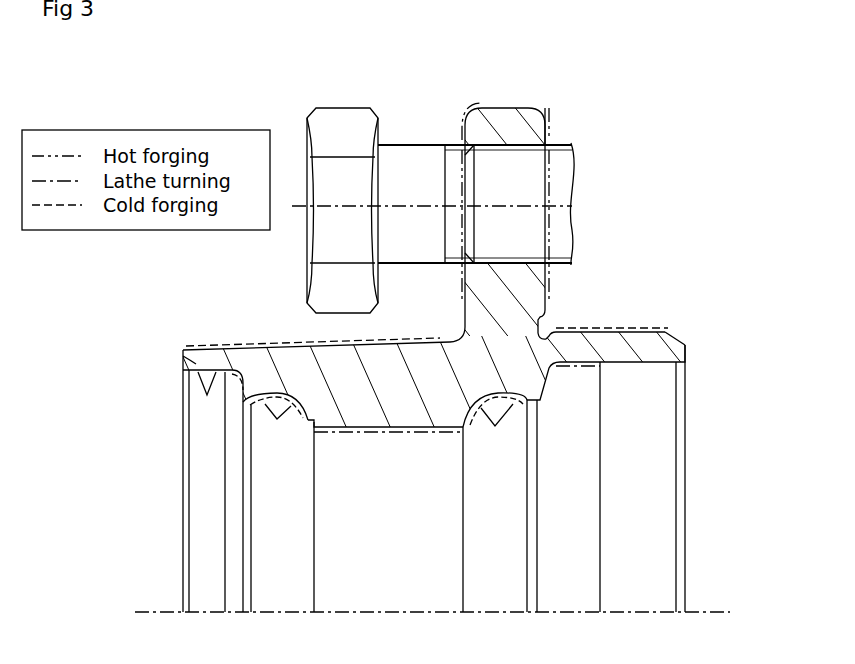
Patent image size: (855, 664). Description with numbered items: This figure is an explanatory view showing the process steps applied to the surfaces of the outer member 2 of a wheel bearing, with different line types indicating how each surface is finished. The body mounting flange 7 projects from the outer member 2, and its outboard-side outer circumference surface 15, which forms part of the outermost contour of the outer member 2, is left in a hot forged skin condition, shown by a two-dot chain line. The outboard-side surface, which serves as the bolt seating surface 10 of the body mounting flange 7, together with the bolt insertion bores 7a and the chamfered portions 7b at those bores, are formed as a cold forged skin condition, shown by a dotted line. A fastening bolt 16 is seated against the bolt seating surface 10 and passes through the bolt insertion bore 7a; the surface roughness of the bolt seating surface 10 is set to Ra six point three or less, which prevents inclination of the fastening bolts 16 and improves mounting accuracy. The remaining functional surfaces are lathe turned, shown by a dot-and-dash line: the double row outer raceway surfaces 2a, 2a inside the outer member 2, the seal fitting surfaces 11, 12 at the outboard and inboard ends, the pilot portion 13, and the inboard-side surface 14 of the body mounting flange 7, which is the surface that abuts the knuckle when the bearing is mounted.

The outer member 2 is at (706, 232).
The double row outer raceway surfaces 2a is at (270, 404).
The body mounting flange 7 is at (507, 118).
The bolt insertion bores 7a is at (530, 247).
The chamfered portions 7b is at (462, 146).
The outboard-side surface (bolt seating surface) 10 is at (466, 270).
The seal fitting surface 11 is at (200, 378).
The seal fitting surface 12 is at (640, 362).
The pilot portion 13 is at (598, 333).
The inboard-side surface 14 is at (548, 138).
The outboard-side outer circumference surface 15 is at (307, 342).
The fastening bolt 16 is at (347, 130).